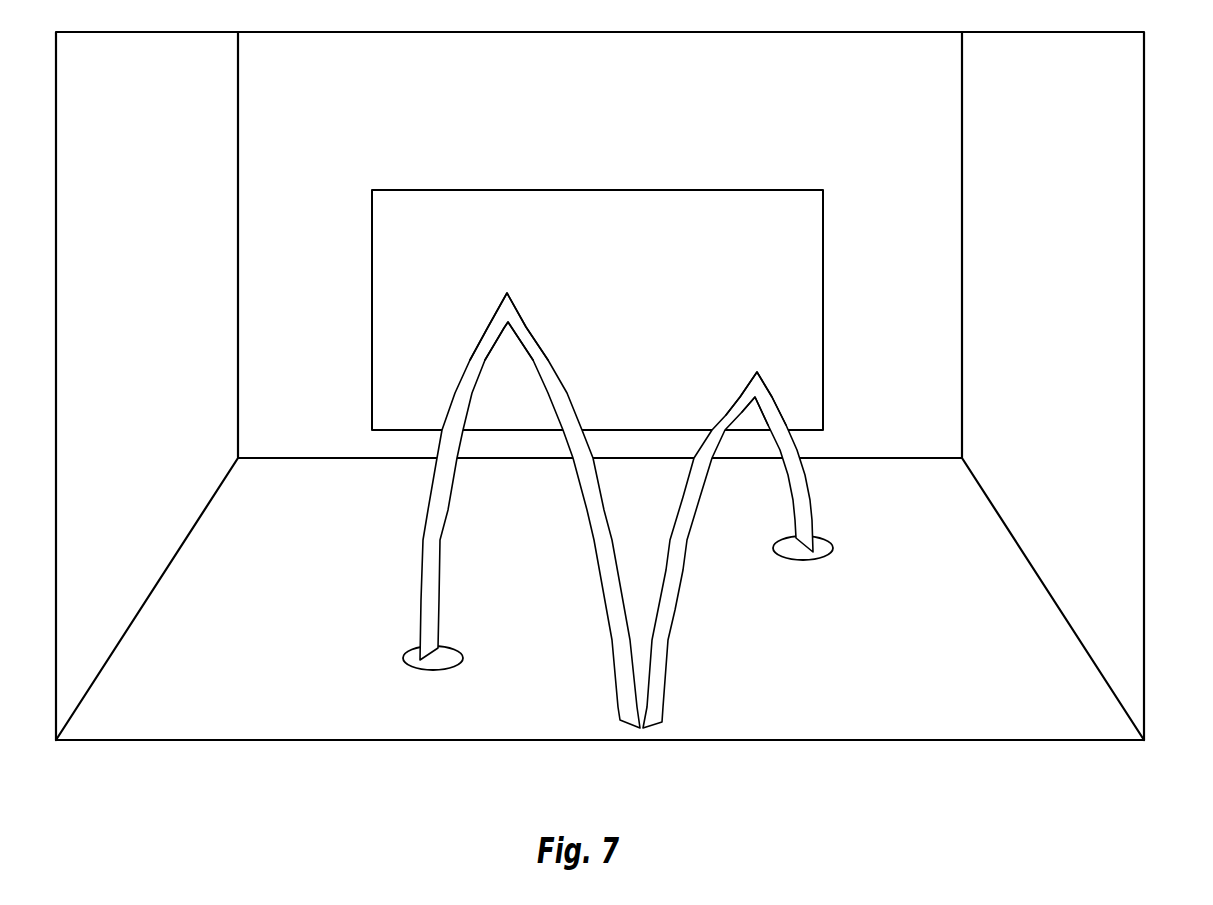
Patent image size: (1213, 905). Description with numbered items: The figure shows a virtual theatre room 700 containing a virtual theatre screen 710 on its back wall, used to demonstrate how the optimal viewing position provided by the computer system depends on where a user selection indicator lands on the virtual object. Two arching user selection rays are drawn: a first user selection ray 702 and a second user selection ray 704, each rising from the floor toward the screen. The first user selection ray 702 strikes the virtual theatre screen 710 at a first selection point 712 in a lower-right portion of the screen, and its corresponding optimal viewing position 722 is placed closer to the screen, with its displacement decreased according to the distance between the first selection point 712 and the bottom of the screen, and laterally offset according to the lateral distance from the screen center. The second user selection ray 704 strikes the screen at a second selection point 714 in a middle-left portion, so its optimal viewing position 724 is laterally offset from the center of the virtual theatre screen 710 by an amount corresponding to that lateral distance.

The virtual theatre room 700 is at (1113, 400).
The first user selection ray 702 is at (677, 592).
The second user selection ray 704 is at (607, 626).
The virtual theatre screen 710 is at (696, 190).
The first selection point 712 is at (757, 372).
The second selection point 714 is at (507, 293).
The optimal viewing position 722 is at (827, 556).
The optimal viewing position 724 is at (409, 666).